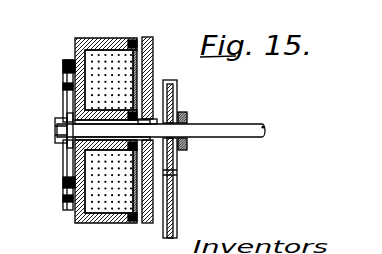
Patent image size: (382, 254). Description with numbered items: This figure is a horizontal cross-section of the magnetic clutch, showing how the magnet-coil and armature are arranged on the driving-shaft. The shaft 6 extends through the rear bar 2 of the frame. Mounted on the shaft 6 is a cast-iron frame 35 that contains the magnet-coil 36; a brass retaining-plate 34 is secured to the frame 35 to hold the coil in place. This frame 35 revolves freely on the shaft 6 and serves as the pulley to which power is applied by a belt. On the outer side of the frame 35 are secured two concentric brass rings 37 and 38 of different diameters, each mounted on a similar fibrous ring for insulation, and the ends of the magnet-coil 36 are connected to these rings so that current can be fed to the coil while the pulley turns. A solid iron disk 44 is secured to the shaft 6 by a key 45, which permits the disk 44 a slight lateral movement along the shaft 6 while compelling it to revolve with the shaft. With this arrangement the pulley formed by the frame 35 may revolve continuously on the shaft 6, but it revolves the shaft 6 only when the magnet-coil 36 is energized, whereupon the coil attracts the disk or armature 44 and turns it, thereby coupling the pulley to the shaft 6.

The cast-iron frame 35 is at (80, 38).
The magnet-coil 36 is at (107, 73).
The brass retaining-plate 34 is at (134, 40).
The solid iron disk 44 is at (152, 50).
The key 45 is at (155, 118).
The rear bar of the frame 2 is at (187, 113).
The shaft 6 is at (210, 128).
The brass ring 38 is at (68, 177).
The brass ring 37 is at (68, 198).